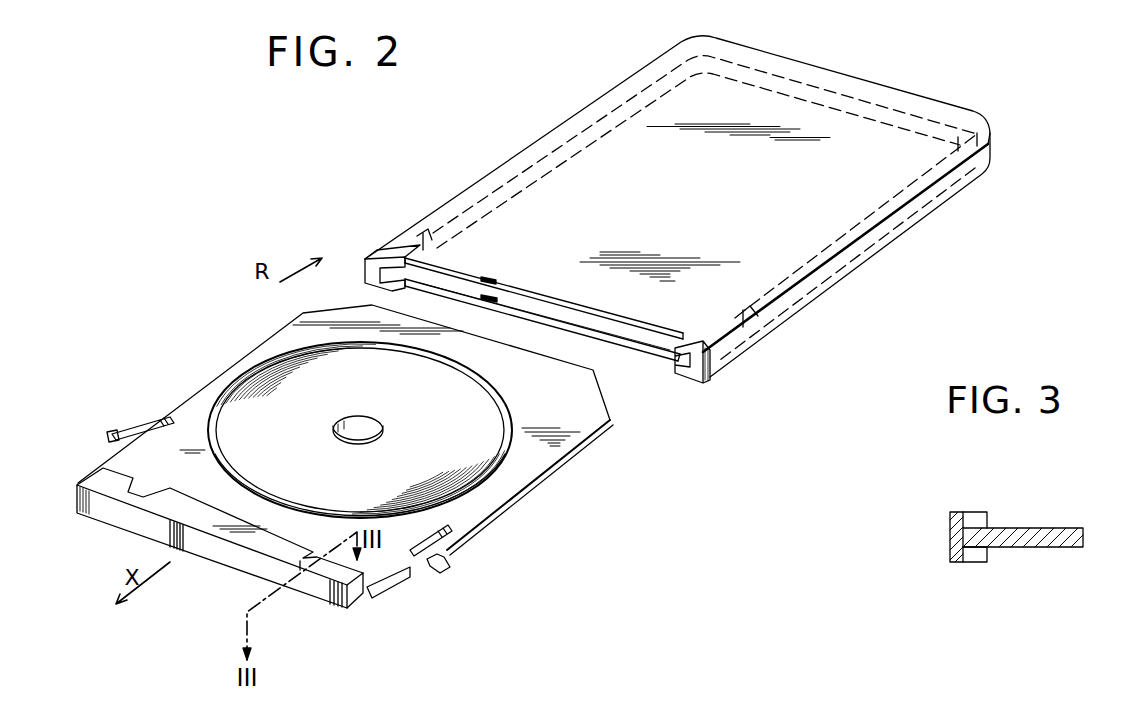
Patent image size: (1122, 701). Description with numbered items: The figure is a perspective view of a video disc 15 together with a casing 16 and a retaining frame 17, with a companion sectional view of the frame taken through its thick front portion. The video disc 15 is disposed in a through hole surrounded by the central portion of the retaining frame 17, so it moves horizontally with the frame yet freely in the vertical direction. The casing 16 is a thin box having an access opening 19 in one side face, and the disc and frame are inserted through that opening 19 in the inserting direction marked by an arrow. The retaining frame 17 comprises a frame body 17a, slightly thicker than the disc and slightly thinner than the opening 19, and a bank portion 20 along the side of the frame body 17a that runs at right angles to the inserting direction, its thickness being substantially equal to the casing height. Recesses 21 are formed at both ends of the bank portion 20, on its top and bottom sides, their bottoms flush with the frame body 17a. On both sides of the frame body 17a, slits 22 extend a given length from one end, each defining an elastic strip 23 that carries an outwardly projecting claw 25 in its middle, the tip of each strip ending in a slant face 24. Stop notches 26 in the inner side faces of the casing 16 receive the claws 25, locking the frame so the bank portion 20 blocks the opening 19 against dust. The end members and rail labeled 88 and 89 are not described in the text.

In FIG. 2, the video disc 15 is at (262, 384).
In FIG. 2, the casing 16 is at (518, 200).
In FIG. 2, the retaining frame 17 is at (534, 500).
In FIG. 3, the retaining frame 17 is at (1017, 548).
In FIG. 2, the frame body 17a is at (548, 459).
In FIG. 2, the access opening 19 is at (537, 309).
In FIG. 2, the bank portion 20 is at (210, 535).
In FIG. 3, the bank portion 20 is at (951, 515).
In FIG. 2, the recesses 21 is at (137, 493).
In FIG. 3, the recesses 21 is at (976, 512).
In FIG. 2, the slits 22 is at (134, 426).
In FIG. 2, the elastic strip 23 is at (102, 455).
In FIG. 2, the slant face 24 is at (78, 484).
In FIG. 2, the claw 25 is at (112, 430).
In FIG. 2, the stop notches 26 is at (418, 232).
In FIG. 2, the side rail 88 is at (540, 298).
In FIG. 2, the rail end block 89 is at (390, 254).